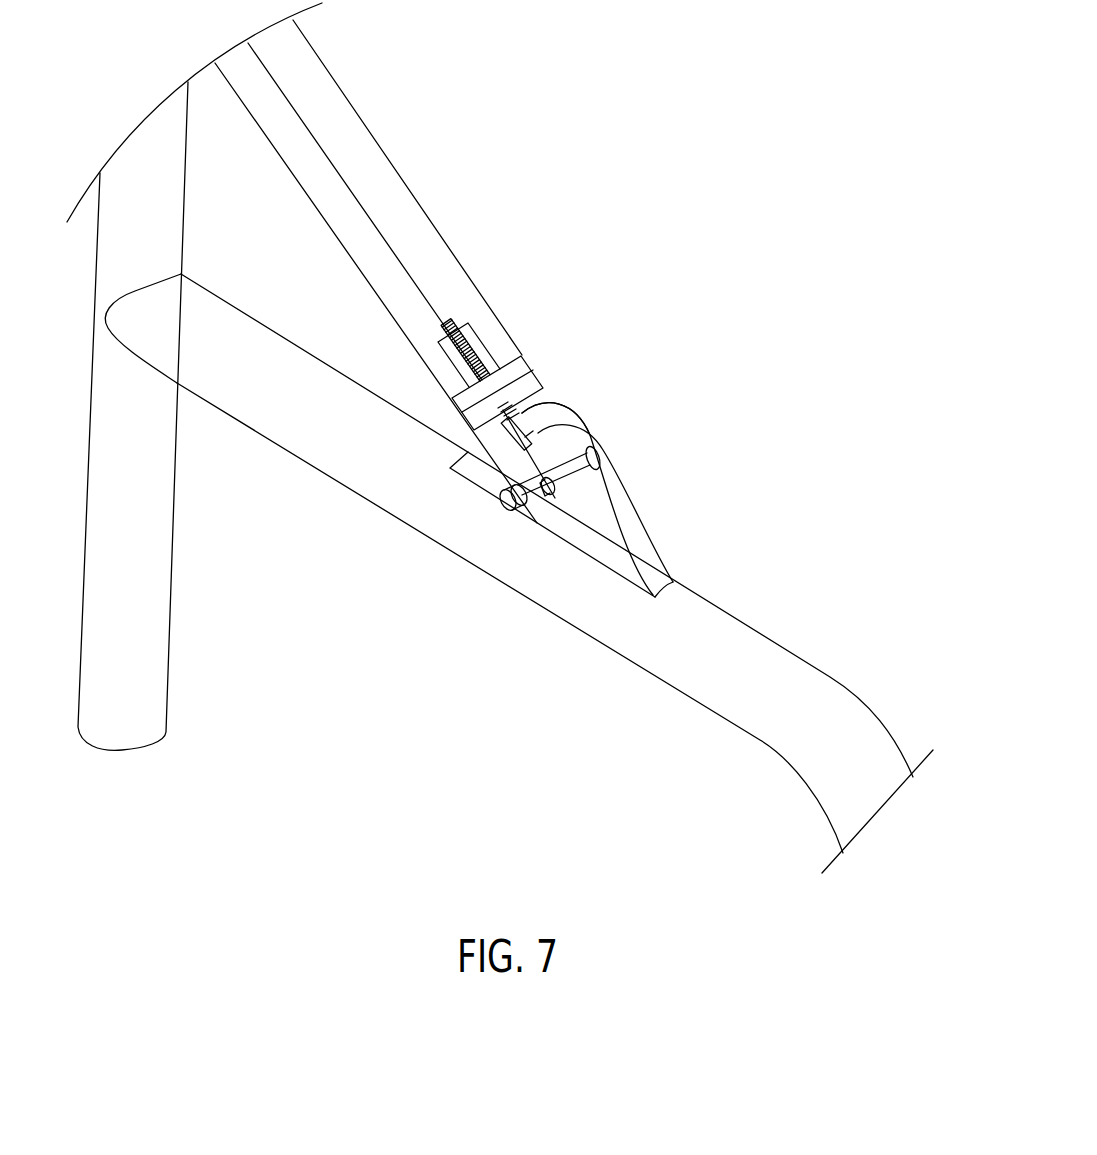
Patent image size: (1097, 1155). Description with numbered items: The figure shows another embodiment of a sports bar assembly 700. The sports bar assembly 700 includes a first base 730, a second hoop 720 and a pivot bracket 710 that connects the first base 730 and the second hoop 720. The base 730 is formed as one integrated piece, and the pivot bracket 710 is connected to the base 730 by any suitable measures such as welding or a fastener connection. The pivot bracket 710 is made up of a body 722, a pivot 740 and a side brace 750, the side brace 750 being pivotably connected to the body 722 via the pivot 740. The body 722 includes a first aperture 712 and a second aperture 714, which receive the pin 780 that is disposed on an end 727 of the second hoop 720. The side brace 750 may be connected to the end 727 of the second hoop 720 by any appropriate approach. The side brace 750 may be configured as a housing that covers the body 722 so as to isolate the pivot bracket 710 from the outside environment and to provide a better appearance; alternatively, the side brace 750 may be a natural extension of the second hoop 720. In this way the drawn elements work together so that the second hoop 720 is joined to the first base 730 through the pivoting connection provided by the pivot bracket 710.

The sports bar assembly 700 is at (652, 362).
The pivot bracket 710 is at (572, 408).
The first aperture 712 is at (570, 428).
The second aperture 714 is at (597, 456).
The second hoop 720 is at (417, 208).
The body 722 is at (622, 546).
The end 727 is at (497, 337).
The first base 730 is at (706, 683).
The pivot 740 is at (504, 506).
The side brace 750 is at (542, 496).
The pin 780 is at (488, 447).